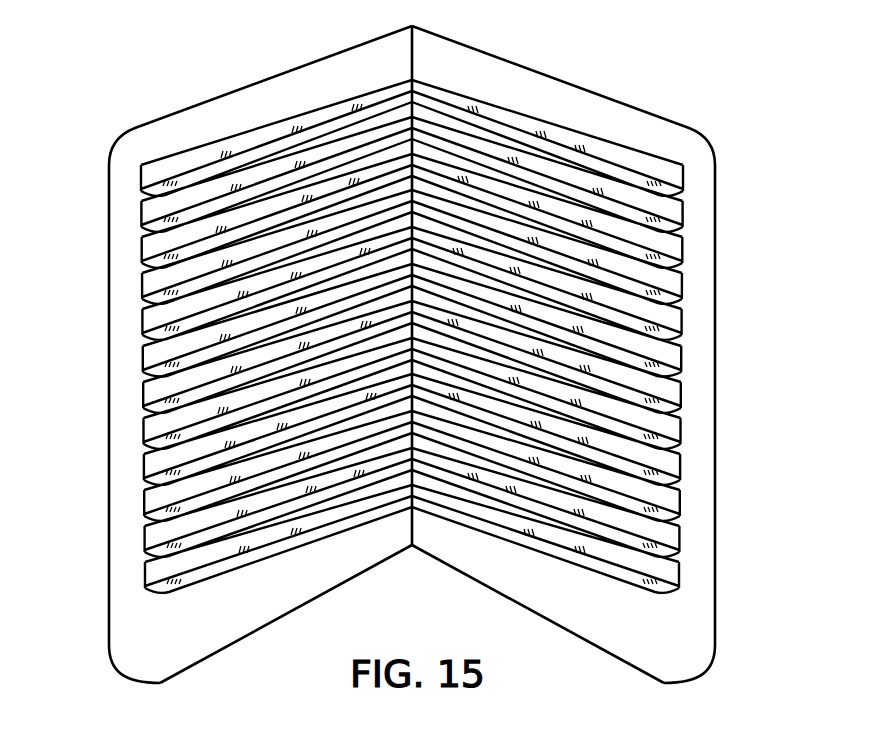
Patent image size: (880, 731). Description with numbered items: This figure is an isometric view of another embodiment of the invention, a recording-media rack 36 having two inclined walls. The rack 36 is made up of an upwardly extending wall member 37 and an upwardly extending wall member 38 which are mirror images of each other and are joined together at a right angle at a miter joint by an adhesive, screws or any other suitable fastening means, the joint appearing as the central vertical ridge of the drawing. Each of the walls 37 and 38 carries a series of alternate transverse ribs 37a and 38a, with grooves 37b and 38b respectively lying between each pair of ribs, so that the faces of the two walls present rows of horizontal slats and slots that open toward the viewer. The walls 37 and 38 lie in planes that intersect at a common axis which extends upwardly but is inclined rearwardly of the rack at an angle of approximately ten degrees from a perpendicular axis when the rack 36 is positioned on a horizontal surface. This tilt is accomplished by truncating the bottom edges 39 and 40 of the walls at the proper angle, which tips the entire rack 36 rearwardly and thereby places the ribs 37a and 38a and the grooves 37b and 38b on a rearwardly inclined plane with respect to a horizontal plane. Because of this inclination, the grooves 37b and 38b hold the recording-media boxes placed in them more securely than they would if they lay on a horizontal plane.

The recording-media rack 36 is at (599, 88).
The upwardly extending wall member 37 is at (300, 66).
The upwardly extending wall member 38 is at (499, 58).
The transverse ribs 37a is at (157, 249).
The grooves 37b is at (158, 358).
The transverse ribs 38a is at (667, 249).
The grooves 38b is at (666, 358).
The bottom edge 39 is at (328, 592).
The bottom edge 40 is at (512, 599).